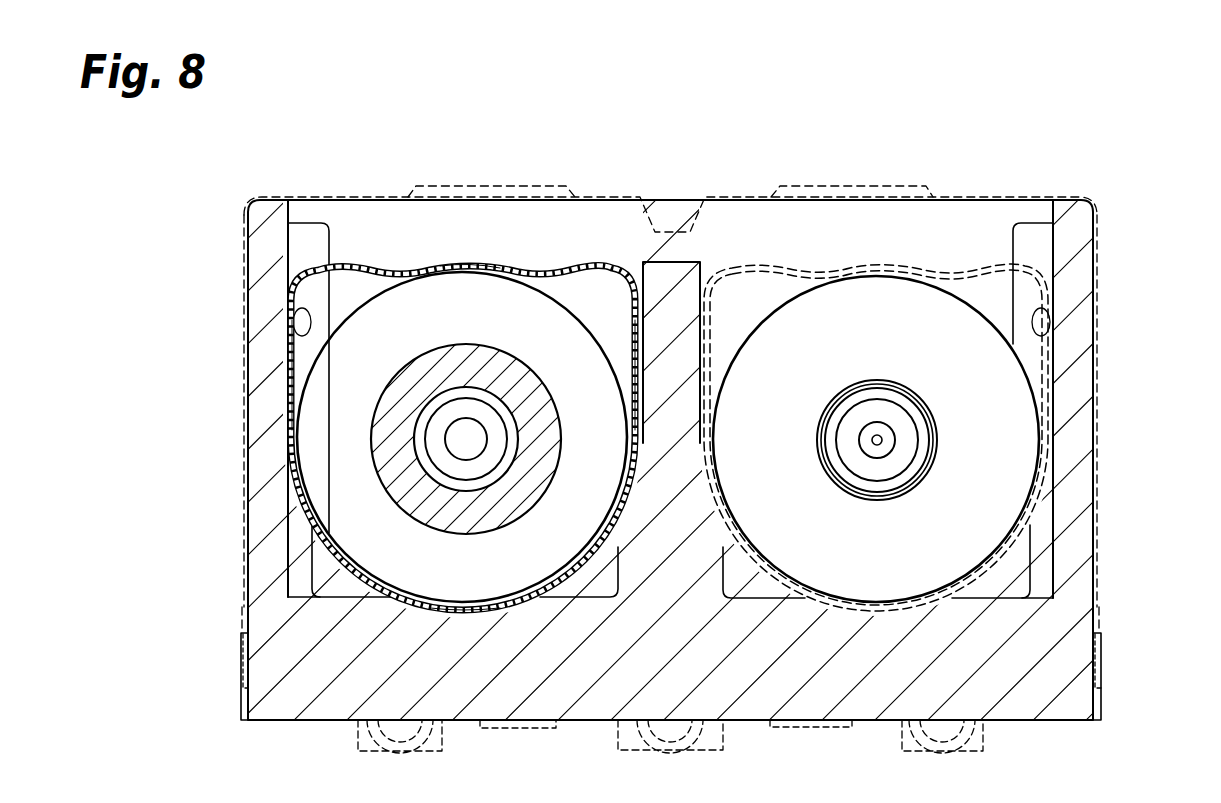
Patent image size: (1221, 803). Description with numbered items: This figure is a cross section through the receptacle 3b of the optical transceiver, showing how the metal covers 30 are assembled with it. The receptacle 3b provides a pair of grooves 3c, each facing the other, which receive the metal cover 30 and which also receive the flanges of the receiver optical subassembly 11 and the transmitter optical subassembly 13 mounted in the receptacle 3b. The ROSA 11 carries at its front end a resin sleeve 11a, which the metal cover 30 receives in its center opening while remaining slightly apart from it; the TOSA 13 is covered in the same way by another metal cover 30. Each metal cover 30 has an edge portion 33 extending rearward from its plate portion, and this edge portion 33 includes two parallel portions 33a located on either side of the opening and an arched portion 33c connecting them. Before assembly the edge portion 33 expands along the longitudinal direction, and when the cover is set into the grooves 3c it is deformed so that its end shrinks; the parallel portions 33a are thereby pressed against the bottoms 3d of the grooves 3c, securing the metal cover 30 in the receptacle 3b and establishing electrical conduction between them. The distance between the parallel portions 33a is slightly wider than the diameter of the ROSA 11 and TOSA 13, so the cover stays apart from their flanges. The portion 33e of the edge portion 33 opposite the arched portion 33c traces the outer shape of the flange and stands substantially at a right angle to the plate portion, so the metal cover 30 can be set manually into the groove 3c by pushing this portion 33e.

The receptacle 3b is at (300, 690).
The groove 3c is at (305, 258).
The bottom of the groove 3d is at (295, 306).
The receiver optical subassembly (ROSA) 11 is at (360, 535).
The sleeve 11a is at (385, 455).
The transmitter optical subassembly (TOSA) 13 is at (1013, 437).
The metal cover 30 is at (551, 270).
The edge portion 33 is at (362, 263).
The parallel portion 33a is at (290, 390).
The arched portion 33c is at (465, 613).
The pushing portion 33e is at (462, 268).